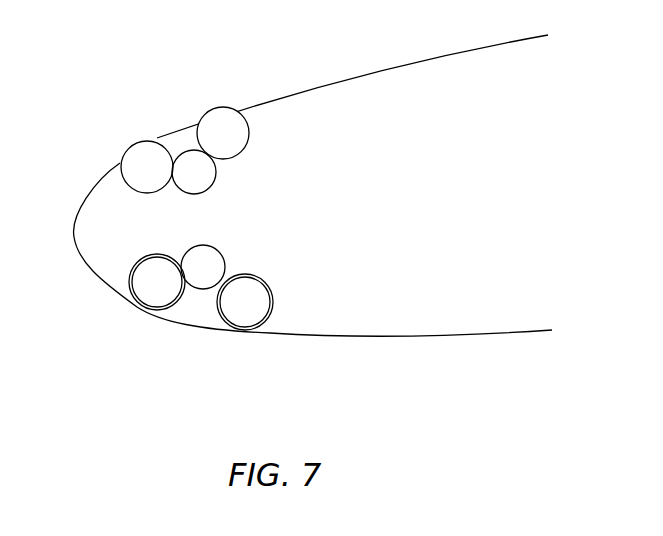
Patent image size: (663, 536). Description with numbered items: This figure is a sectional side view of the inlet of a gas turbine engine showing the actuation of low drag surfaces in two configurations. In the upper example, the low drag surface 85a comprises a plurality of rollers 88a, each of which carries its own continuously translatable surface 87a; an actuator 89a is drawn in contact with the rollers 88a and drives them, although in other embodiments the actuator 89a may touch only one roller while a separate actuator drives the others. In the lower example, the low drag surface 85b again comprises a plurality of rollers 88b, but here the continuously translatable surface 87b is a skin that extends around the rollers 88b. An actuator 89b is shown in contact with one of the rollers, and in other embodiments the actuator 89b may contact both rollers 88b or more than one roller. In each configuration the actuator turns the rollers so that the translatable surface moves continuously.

The low drag surface 85a is at (171, 109).
The continuously translatable surface 87a is at (133, 143).
The rollers 88a is at (222, 127).
The actuator 89a is at (202, 175).
The low drag surface 85b is at (200, 334).
The continuously translatable surface 87b is at (163, 312).
The rollers 88b is at (237, 318).
The actuator 89b is at (213, 266).